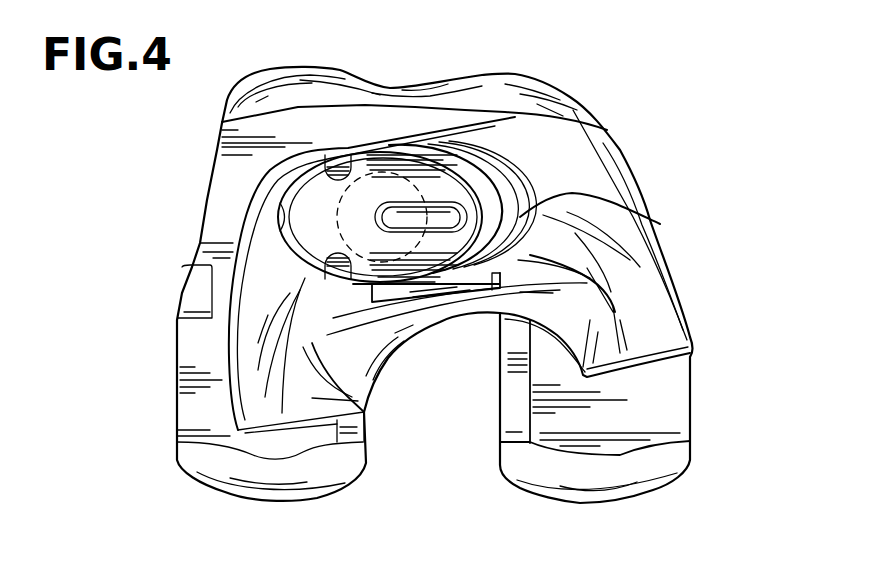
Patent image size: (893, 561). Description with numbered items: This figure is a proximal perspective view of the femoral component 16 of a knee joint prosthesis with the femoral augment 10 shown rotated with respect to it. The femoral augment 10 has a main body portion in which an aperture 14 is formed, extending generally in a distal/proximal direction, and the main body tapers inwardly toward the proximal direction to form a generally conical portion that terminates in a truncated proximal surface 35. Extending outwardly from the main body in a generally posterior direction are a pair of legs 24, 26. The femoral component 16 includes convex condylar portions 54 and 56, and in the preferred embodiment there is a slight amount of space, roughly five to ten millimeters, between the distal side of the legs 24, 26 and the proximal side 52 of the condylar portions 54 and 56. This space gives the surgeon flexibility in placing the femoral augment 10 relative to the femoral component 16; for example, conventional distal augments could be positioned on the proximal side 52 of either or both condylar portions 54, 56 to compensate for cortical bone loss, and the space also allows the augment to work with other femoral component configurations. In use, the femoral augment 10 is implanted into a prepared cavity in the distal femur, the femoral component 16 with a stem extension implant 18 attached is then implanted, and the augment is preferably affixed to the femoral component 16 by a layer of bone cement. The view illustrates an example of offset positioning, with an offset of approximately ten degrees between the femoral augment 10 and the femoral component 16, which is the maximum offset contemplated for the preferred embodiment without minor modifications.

The femoral augment 10 is at (262, 245).
The aperture 14 is at (492, 277).
The femoral component 16 is at (213, 172).
The stem extension implant 18 is at (420, 185).
The leg 24 is at (633, 333).
The leg 26 is at (364, 413).
The truncated proximal surface 35 is at (660, 224).
The proximal side 52 is at (673, 418).
The convex condylar portion 54 is at (660, 388).
The convex condylar portion 56 is at (200, 352).